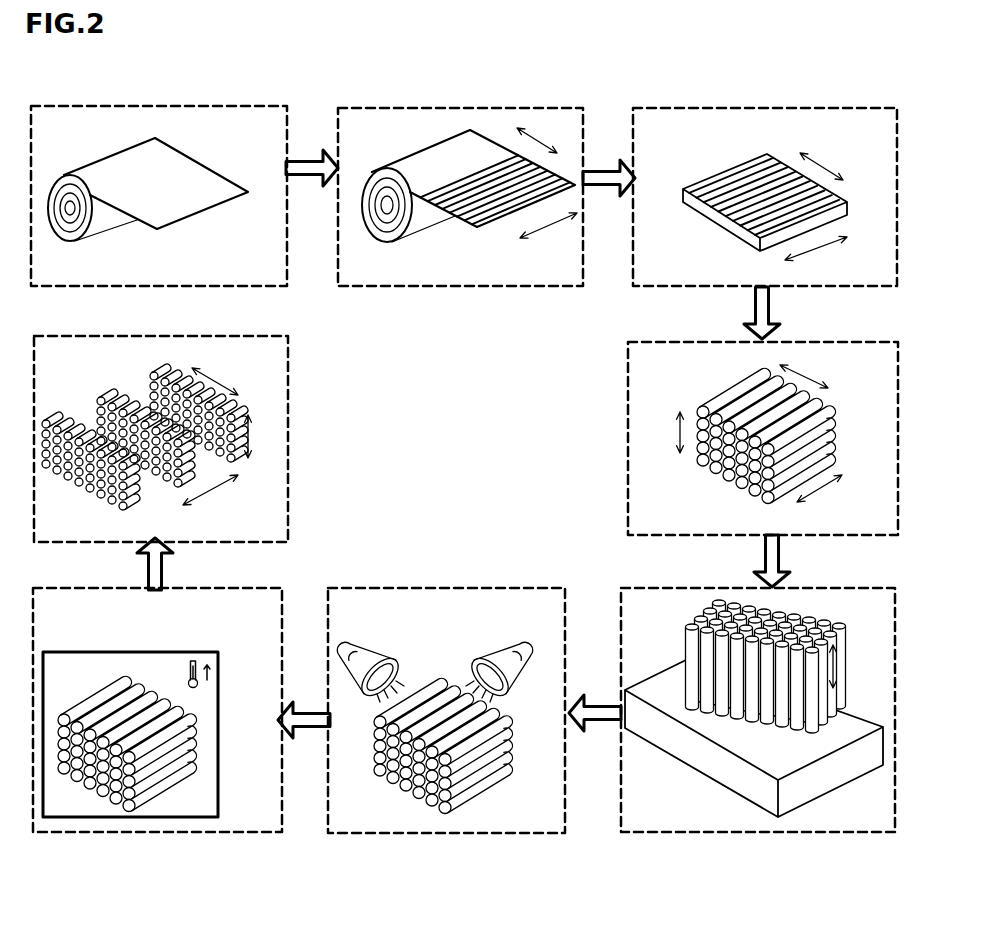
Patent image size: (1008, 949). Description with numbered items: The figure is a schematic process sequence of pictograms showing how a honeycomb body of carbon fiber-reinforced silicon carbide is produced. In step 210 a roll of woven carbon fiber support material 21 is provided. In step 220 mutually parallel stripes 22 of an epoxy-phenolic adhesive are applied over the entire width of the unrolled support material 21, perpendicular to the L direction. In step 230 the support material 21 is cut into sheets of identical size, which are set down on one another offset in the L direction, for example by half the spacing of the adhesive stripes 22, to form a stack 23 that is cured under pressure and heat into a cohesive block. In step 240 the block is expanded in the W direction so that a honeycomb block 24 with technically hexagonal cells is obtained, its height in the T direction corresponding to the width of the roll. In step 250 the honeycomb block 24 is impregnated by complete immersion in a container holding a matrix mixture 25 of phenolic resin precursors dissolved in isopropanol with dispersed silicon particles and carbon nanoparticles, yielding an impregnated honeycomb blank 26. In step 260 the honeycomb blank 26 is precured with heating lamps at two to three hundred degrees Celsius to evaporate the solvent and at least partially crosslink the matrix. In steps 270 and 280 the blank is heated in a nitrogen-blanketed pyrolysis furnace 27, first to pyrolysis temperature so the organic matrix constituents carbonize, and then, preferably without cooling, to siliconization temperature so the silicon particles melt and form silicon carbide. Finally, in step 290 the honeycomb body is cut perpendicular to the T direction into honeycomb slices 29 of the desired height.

The support material 21 is at (193, 193).
The stripes of adhesive 22 is at (463, 222).
The stack 23 is at (723, 218).
The honeycomb block 24 is at (725, 468).
The matrix mixture 25 is at (752, 752).
The honeycomb blank 26 is at (488, 787).
The pyrolysis furnace 27 is at (213, 755).
The honeycomb slices 29 is at (127, 507).
The step of providing support material 210 is at (78, 135).
The step of applying adhesive stripes 220 is at (387, 139).
The step of cutting and stacking 230 is at (688, 139).
The expansion step 240 is at (682, 374).
The impregnation step 250 is at (670, 614).
The precuring step 260 is at (376, 618).
The pyrolysis step 270 is at (138, 620).
The siliconization step 280 is at (130, 734).
The cutting step 290 is at (85, 371).